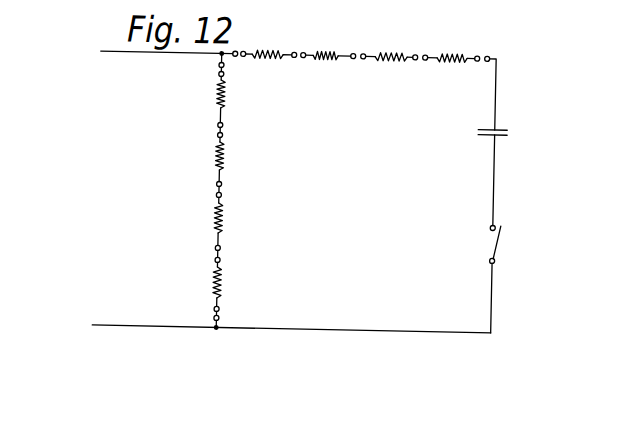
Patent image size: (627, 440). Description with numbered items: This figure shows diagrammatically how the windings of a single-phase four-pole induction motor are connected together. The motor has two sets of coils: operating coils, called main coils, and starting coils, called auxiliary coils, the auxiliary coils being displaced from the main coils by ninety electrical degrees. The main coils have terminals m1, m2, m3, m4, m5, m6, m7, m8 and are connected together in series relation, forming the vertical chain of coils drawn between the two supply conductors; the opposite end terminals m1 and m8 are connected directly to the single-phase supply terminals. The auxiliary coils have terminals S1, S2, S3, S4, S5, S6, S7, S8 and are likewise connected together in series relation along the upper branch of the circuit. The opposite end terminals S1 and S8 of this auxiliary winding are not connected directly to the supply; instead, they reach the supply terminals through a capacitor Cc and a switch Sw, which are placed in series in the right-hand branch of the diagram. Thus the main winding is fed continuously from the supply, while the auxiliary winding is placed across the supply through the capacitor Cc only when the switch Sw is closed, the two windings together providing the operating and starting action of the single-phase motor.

The auxiliary coil terminal S1 is at (244, 43).
The auxiliary coil terminal S2 is at (293, 67).
The auxiliary coil terminal S3 is at (314, 43).
The auxiliary coil terminal S4 is at (348, 67).
The auxiliary coil terminal S5 is at (374, 44).
The auxiliary coil terminal S6 is at (416, 70).
The auxiliary coil terminal S7 is at (436, 47).
The auxiliary coil terminal S8 is at (476, 70).
The main coil terminal m1 is at (237, 74).
The main coil terminal m2 is at (237, 121).
The main coil terminal m3 is at (236, 139).
The main coil terminal m4 is at (235, 184).
The main coil terminal m5 is at (235, 201).
The main coil terminal m6 is at (234, 246).
The main coil terminal m7 is at (234, 264).
The main coil terminal m8 is at (233, 311).
The capacitor Cc is at (503, 119).
The switch Sw is at (510, 244).